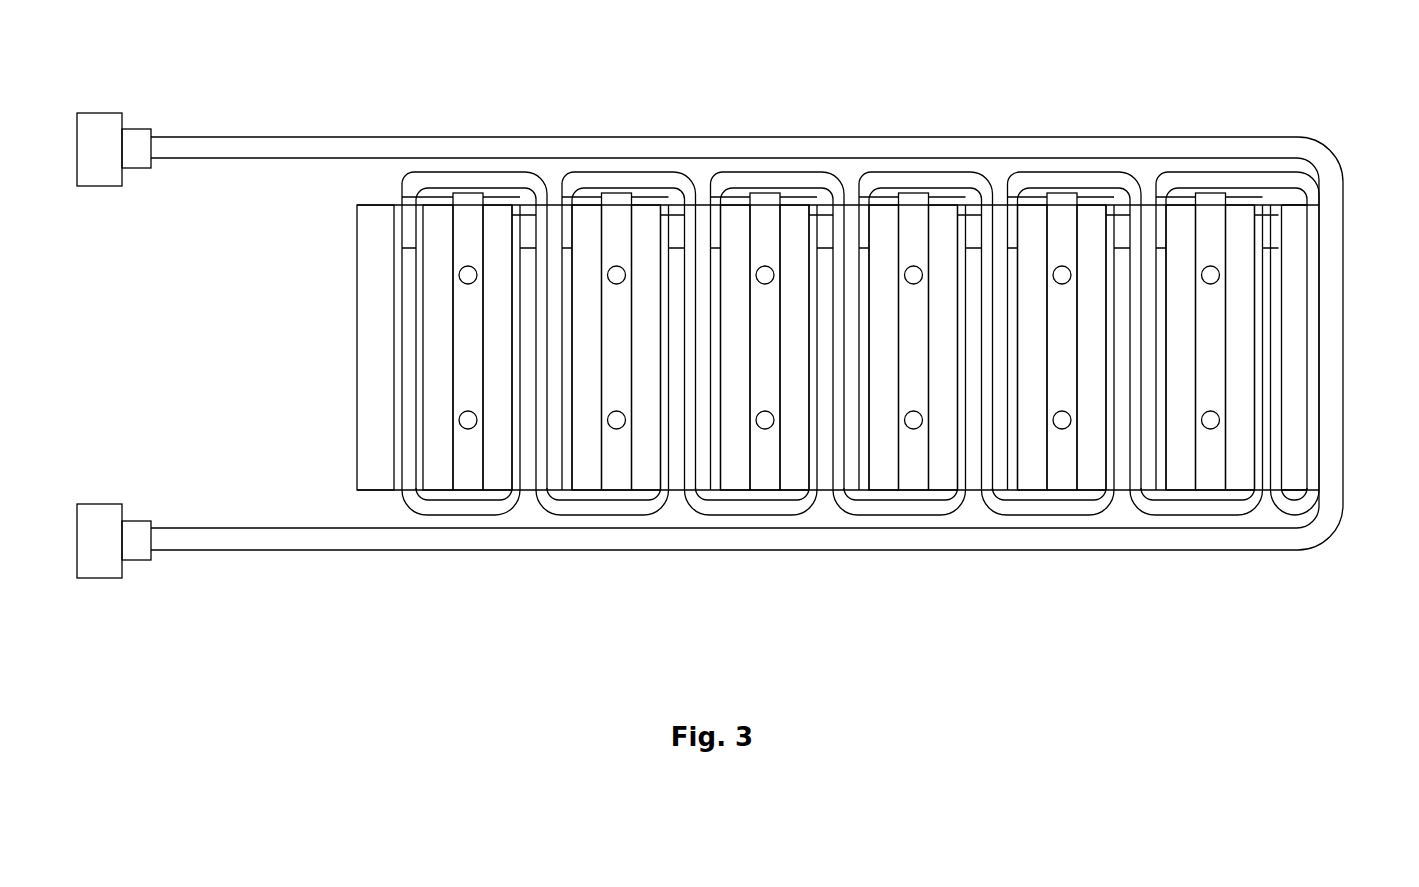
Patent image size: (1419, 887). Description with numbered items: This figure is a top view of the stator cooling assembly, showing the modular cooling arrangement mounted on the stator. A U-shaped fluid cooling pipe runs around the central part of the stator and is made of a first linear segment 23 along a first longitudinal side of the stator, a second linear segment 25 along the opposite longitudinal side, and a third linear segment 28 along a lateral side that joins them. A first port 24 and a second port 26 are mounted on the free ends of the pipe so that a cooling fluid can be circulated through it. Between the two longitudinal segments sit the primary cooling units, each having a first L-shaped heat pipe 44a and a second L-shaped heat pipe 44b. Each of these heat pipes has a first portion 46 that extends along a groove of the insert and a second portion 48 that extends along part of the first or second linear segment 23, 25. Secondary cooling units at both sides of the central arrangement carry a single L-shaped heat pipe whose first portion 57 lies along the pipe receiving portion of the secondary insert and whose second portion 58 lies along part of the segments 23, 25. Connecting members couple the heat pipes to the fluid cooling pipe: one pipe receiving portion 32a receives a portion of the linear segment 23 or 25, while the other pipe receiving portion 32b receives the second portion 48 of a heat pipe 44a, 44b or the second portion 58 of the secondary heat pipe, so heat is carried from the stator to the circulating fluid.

The first linear segment 23 is at (947, 150).
The first port 24 is at (97, 157).
The second linear segment 25 is at (1047, 540).
The second port 26 is at (97, 548).
The third linear segment 28 is at (1330, 372).
The pipe receiving portion 32a is at (501, 133).
The pipe receiving portion 32b is at (458, 168).
The first L-shaped heat pipe 44a is at (849, 168).
The second L-shaped heat pipe 44b is at (824, 524).
The first portion 46 is at (828, 362).
The second portion 48 is at (797, 182).
The first portion 57 is at (408, 355).
The second portion 58 is at (1205, 182).